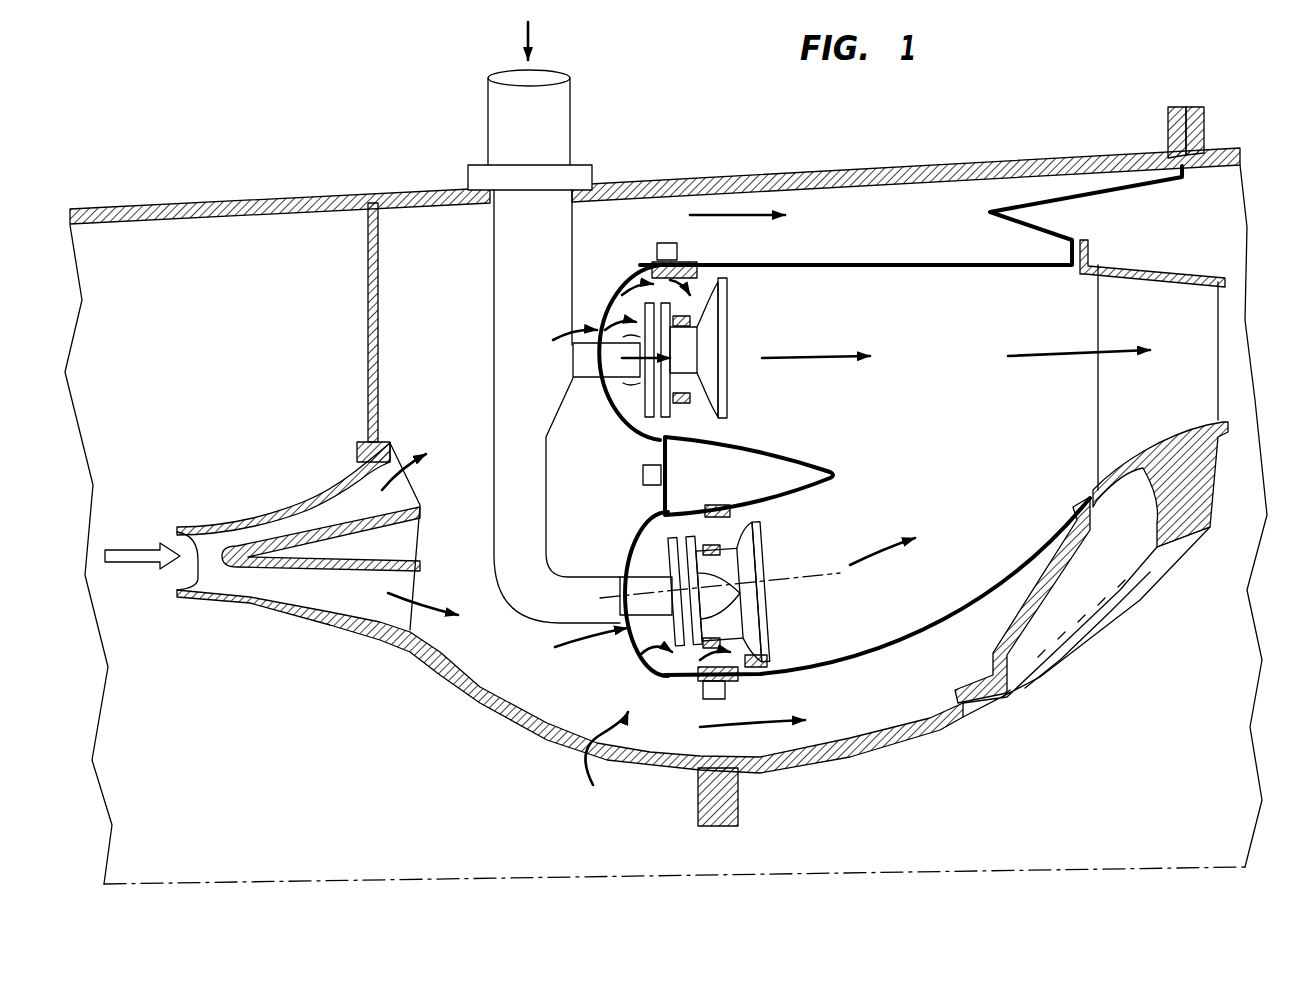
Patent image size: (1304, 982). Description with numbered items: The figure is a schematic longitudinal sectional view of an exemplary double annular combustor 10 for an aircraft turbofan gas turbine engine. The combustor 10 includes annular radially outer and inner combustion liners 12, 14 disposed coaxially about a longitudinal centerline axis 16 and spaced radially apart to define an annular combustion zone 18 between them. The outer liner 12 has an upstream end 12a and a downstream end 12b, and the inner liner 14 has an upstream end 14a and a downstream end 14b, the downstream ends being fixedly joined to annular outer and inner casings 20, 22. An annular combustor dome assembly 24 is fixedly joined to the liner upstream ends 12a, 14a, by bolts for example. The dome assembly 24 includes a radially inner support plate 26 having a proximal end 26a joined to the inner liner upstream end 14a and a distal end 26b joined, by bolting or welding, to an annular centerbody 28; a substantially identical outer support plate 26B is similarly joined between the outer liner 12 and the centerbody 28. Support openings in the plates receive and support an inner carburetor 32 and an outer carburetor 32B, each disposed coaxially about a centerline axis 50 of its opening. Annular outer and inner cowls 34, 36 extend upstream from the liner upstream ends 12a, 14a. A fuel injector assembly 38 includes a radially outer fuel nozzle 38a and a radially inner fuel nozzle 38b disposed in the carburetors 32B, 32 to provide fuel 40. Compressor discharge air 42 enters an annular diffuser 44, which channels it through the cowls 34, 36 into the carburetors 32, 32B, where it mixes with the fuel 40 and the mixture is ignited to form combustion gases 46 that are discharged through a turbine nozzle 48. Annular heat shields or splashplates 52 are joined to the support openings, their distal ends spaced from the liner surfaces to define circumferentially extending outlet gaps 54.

The double annular combustor 10 is at (822, 196).
The outer combustion liner 12 is at (922, 262).
The outer liner upstream end 12a is at (695, 272).
The outer liner downstream end 12b is at (1034, 270).
The inner combustion liner 14 is at (890, 648).
The inner liner upstream end 14a is at (770, 680).
The inner liner downstream end 14b is at (1046, 535).
The longitudinal centerline axis 16 is at (868, 860).
The combustion zone 18 is at (952, 379).
The outer casing 20 is at (1030, 160).
The inner casing 22 is at (935, 730).
The combustor dome assembly 24 is at (602, 764).
The inner support plate 26 is at (752, 712).
The support plate proximal end 26a is at (682, 680).
The support plate distal end 26b is at (668, 515).
The outer support plate 26B is at (668, 438).
The centerbody 28 is at (804, 461).
The inner carburetor 32 is at (760, 560).
The outer carburetor 32B is at (735, 348).
The outer cowl 34 is at (600, 300).
The inner cowl 36 is at (628, 652).
The fuel injector assembly 38 is at (581, 165).
The outer fuel nozzle 38a is at (590, 362).
The inner fuel nozzle 38b is at (620, 592).
The fuel 40 is at (534, 38).
The compressor discharge air 42 is at (150, 545).
The diffuser 44 is at (289, 612).
The combustion gases 46 is at (852, 355).
The turbine nozzle 48 is at (1135, 265).
The support opening centerline axis 50 is at (800, 578).
The heat shield 52 is at (735, 402).
The outlet gap 54 is at (730, 286).